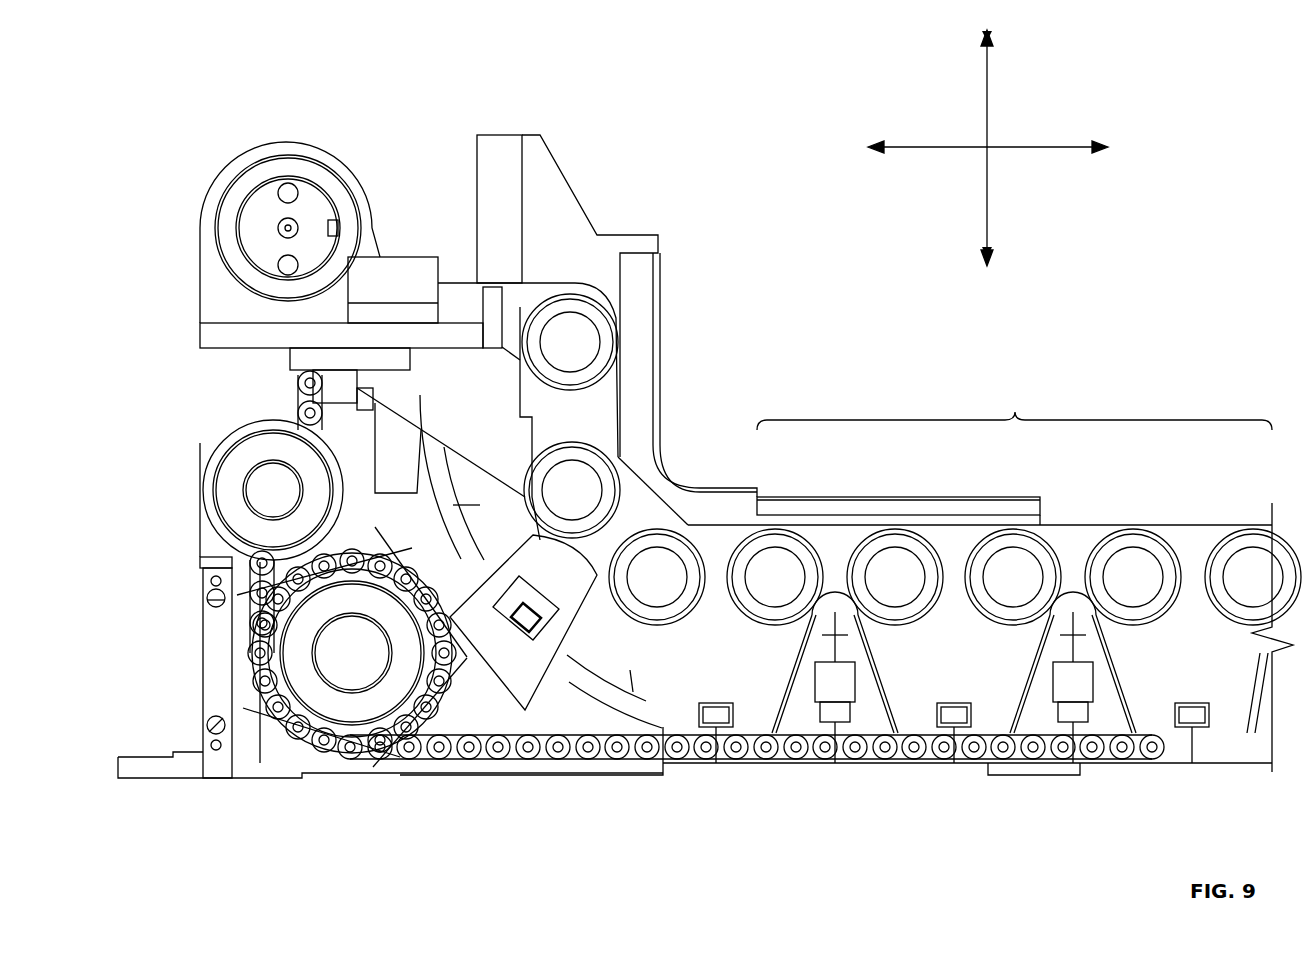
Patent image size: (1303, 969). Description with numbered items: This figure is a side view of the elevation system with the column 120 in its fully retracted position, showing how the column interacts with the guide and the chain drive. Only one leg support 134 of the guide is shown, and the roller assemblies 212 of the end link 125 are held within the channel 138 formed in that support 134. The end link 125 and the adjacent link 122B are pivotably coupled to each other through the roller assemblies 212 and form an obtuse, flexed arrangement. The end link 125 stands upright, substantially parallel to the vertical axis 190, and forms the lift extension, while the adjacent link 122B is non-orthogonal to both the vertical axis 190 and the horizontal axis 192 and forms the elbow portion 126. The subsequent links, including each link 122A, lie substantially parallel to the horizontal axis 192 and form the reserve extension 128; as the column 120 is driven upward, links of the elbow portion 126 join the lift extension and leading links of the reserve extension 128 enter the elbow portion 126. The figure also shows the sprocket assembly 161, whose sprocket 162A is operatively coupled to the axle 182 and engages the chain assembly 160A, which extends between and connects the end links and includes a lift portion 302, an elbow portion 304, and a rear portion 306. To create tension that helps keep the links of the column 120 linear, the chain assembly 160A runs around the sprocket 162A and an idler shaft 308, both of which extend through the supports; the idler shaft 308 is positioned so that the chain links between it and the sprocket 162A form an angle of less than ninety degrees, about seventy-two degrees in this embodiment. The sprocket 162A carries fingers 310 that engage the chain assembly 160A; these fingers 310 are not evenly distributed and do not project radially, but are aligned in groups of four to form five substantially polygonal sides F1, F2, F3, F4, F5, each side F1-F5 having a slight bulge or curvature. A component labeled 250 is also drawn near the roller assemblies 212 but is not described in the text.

The column 120 is at (600, 425).
The link 122A is at (760, 525).
The adjacent link 122B is at (680, 513).
The end link 125 is at (560, 283).
The elbow portion 126 is at (724, 420).
The reserve extension 128 is at (990, 575).
The leg support 134 is at (510, 133).
The channel 138 is at (548, 196).
The chain assembly 160A is at (632, 760).
The sprocket assembly 161 is at (298, 762).
The sprocket 162A is at (477, 737).
The axle 182 is at (352, 653).
The vertical axis 190 is at (987, 110).
The horizontal axis 192 is at (1040, 147).
The roller assembly 212 is at (575, 340).
The idler roller 250 is at (612, 318).
The lift portion 302 is at (256, 395).
The elbow portion 304 is at (196, 682).
The rear portion 306 is at (714, 782).
The idler shaft 308 is at (255, 485).
The fingers 310 is at (480, 540).
The side F1 is at (390, 545).
The side F2 is at (447, 693).
The side F3 is at (330, 758).
The side F4 is at (258, 745).
The side F5 is at (248, 595).